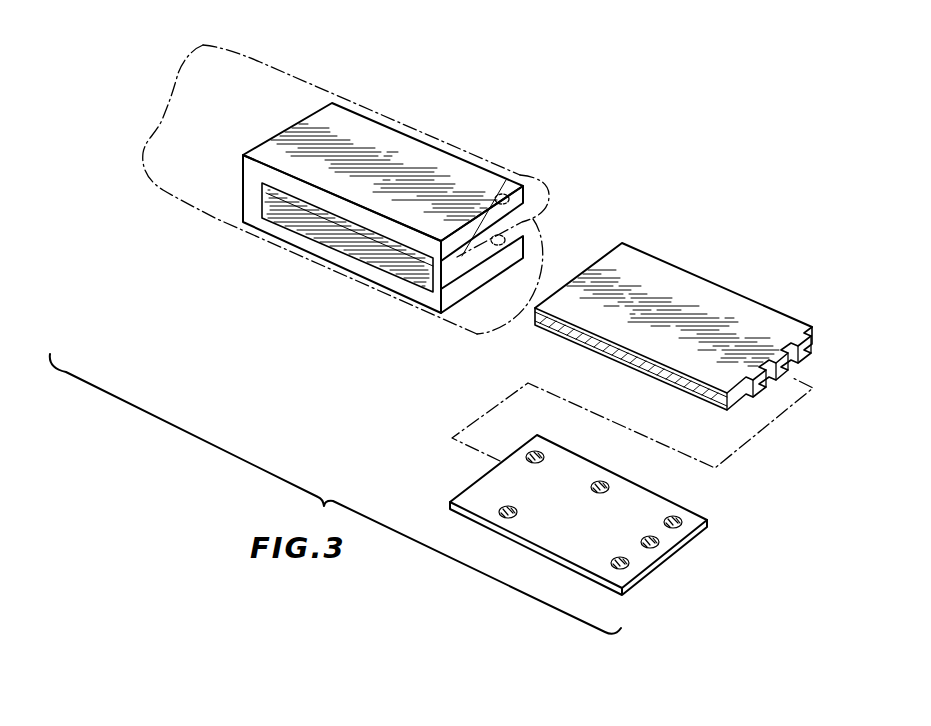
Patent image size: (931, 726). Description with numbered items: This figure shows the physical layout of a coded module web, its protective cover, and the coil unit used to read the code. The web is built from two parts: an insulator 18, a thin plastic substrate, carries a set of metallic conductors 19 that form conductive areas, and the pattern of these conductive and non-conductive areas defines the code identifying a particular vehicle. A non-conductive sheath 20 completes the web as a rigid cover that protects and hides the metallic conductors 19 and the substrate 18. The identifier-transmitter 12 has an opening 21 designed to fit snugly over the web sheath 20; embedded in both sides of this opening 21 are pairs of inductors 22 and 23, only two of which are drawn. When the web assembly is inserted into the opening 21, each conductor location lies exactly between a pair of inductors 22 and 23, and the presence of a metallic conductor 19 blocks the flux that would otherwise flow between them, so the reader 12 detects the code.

The identifier-transmitter 12 is at (318, 75).
The insulator 18 is at (585, 527).
The metallic conductors 19 is at (679, 518).
The non-conductive sheath 20 is at (684, 325).
The opening 21 is at (422, 155).
The inductor 22 is at (500, 193).
The inductor 23 is at (531, 221).